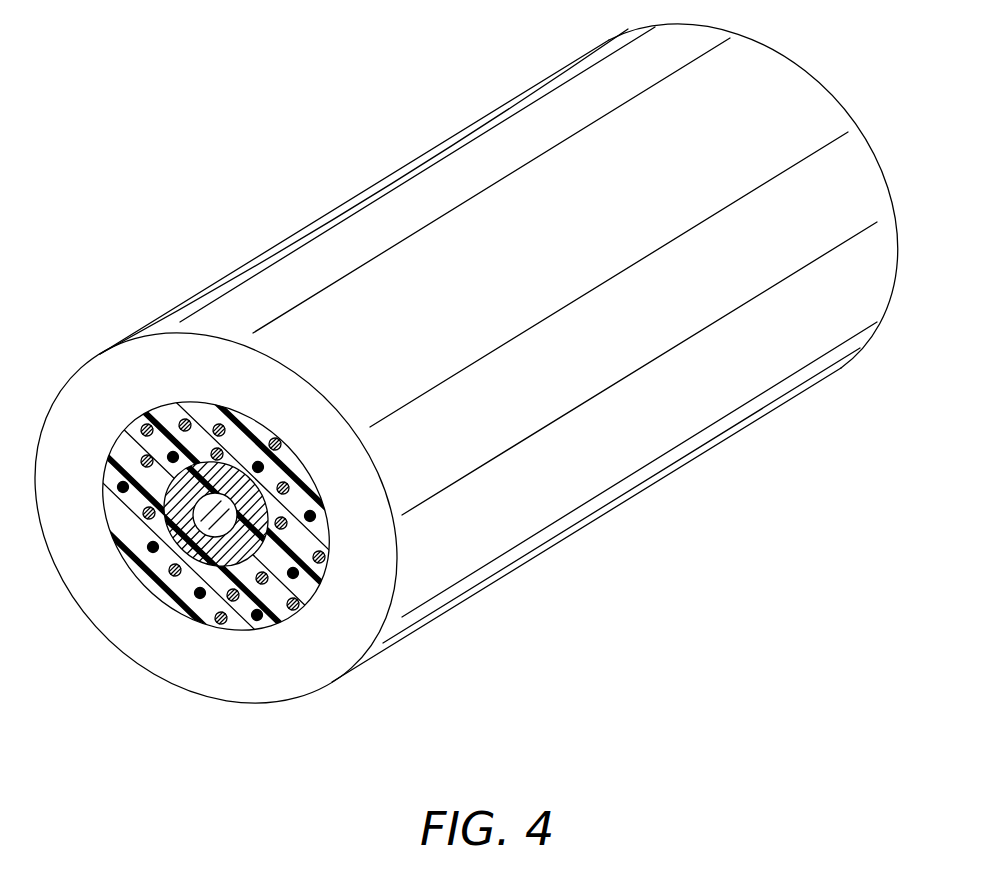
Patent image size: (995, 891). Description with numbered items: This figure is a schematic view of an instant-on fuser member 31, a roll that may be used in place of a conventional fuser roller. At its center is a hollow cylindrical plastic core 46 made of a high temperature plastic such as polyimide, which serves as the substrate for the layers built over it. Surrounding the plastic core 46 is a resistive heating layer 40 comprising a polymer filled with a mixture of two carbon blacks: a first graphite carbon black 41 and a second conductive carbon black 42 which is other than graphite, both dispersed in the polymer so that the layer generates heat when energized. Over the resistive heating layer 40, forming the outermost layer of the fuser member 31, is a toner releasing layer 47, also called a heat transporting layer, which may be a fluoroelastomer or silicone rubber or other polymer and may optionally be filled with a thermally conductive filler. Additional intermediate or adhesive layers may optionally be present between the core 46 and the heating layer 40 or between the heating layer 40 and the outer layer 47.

The instant-on fuser member 31 is at (355, 112).
The resistive heating layer 40 is at (177, 600).
The first graphite carbon black 41 is at (295, 579).
The second conductive carbon black 42 is at (146, 428).
The hollow cylindrical plastic core 46 is at (183, 533).
The toner releasing layer 47 is at (267, 672).